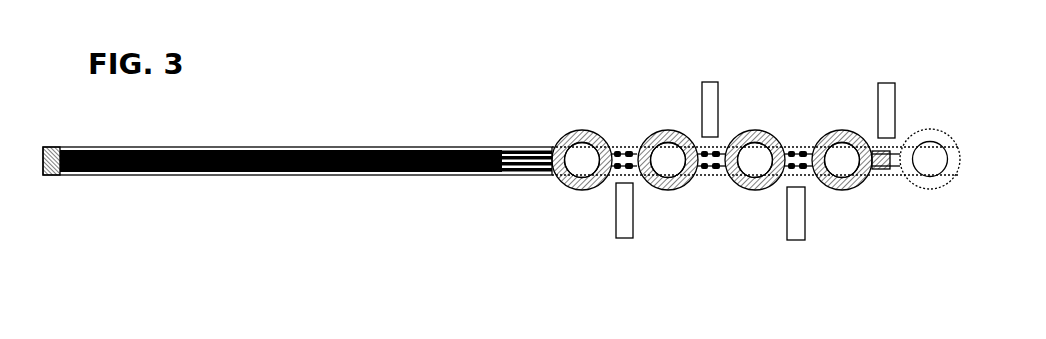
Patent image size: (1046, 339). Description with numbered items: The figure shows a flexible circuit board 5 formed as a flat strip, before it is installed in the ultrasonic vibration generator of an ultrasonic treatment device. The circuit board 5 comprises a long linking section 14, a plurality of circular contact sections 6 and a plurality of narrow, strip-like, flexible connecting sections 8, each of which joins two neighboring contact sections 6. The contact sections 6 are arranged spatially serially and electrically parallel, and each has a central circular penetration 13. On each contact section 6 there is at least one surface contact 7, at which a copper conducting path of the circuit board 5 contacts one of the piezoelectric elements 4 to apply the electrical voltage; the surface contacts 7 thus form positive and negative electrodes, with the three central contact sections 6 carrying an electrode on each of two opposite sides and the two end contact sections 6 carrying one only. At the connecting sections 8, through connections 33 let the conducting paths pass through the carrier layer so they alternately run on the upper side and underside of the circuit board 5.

The piezoelectric element 4 is at (696, 88).
The circuit board 5 is at (477, 96).
The contact section 6 is at (724, 161).
The surface contact 7 is at (575, 183).
The connecting section 8 is at (627, 140).
The penetration 13 is at (580, 152).
The linking section 14 is at (352, 138).
The through connection 33 is at (797, 148).